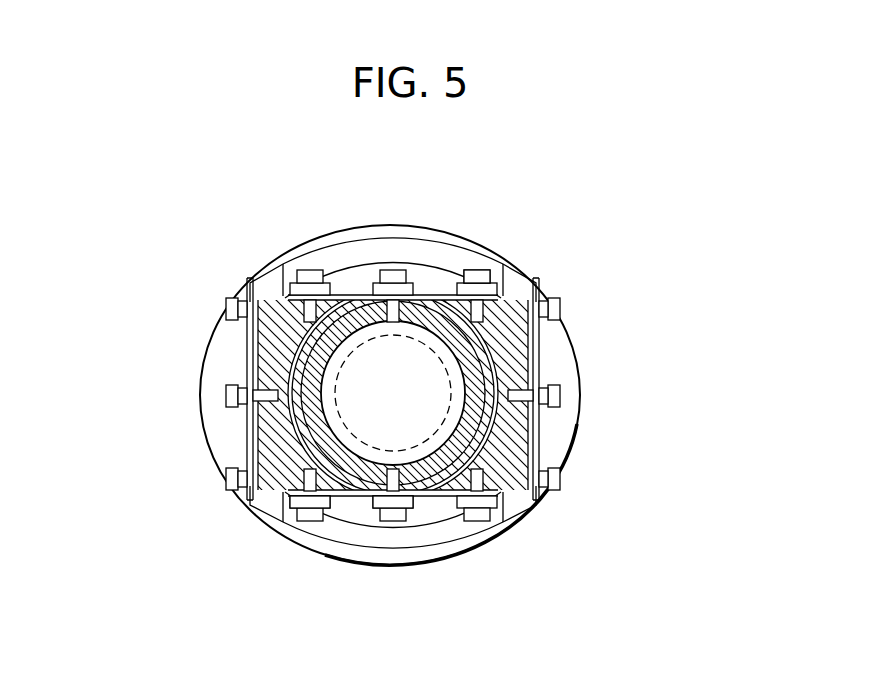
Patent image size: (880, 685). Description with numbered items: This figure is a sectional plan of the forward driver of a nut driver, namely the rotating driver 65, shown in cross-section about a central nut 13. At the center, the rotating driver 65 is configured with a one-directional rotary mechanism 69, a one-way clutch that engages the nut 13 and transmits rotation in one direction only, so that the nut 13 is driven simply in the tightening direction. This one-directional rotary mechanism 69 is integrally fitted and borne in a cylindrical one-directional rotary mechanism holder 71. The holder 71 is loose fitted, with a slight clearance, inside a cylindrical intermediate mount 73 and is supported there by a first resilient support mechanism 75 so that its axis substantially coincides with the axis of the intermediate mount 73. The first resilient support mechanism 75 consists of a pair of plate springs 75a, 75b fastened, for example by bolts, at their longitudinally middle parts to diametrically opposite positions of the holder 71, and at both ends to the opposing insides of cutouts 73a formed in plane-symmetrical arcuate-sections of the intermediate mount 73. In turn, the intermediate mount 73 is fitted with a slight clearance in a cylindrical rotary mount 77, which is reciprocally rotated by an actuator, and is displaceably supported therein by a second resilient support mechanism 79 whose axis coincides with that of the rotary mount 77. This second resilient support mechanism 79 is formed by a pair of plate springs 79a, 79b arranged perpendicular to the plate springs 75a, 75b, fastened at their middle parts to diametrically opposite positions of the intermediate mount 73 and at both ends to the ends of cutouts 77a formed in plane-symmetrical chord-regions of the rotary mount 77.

The rotating driver 65 is at (578, 269).
The rotary mount 77 is at (312, 250).
The cutouts 77a is at (222, 428).
The one-directional rotary mechanism holder 71 is at (358, 298).
The one-directional rotary mechanism 69 is at (437, 300).
The nut 13 is at (245, 365).
The intermediate mount 73 is at (545, 347).
The cutouts 73a is at (343, 272).
The first resilient support mechanism 75 is at (338, 516).
The plate spring 75a is at (444, 282).
The plate spring 75b is at (432, 522).
The second resilient support mechanism 79 is at (224, 356).
The plate spring 79a is at (247, 440).
The plate spring 79b is at (552, 443).